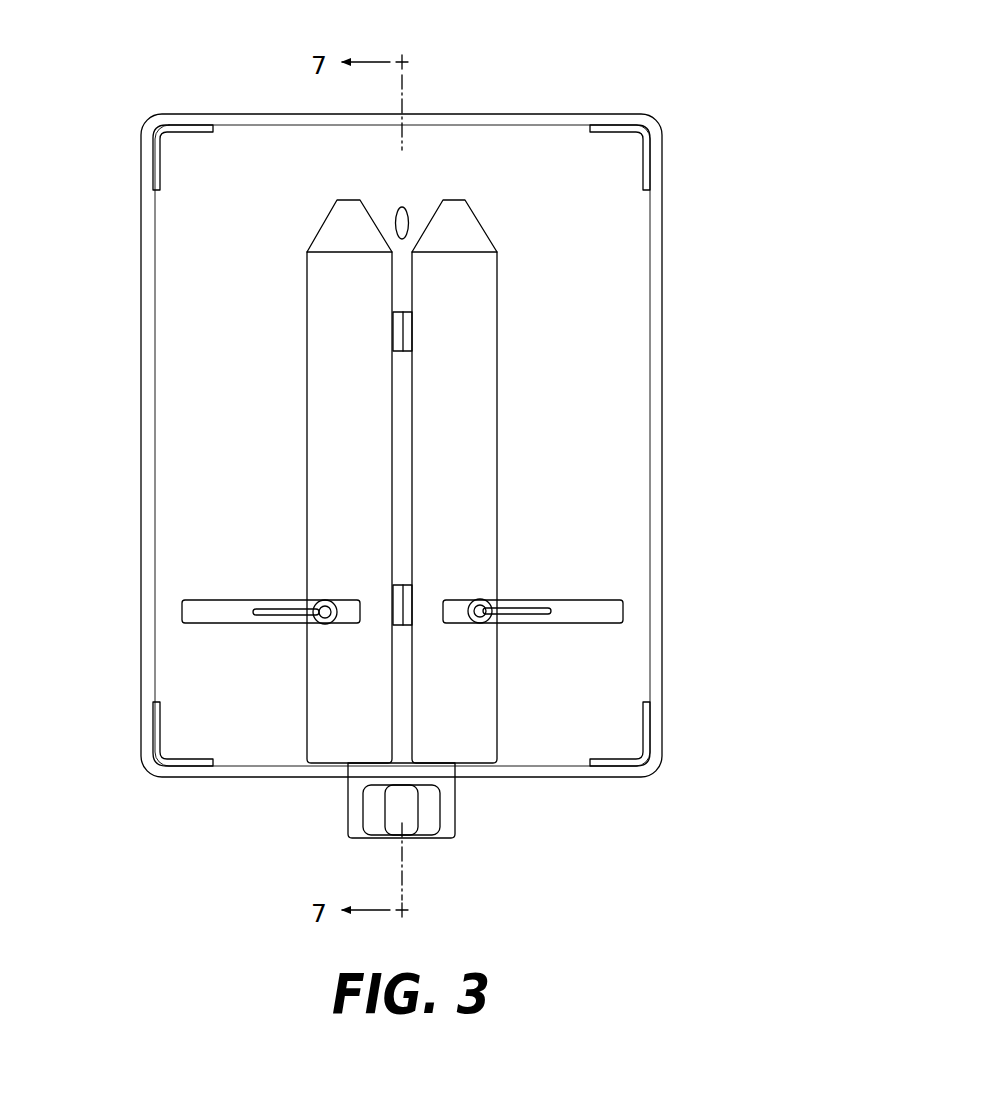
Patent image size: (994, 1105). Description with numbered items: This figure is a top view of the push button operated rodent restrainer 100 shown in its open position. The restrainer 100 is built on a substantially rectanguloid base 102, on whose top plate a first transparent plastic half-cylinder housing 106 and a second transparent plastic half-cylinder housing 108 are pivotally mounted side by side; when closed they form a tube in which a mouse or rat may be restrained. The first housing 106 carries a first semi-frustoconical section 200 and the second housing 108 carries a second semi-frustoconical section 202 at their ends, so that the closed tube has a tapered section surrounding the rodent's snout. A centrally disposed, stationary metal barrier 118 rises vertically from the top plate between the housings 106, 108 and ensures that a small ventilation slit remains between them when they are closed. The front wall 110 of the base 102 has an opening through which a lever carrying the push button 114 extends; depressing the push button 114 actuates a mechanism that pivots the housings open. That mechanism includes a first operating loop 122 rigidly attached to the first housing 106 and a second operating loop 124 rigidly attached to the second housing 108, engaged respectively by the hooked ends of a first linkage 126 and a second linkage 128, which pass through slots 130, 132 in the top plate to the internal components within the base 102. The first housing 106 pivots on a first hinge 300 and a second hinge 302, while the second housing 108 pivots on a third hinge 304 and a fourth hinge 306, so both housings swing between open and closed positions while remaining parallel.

The push button operated rodent restrainer 100 is at (678, 93).
The base 102 is at (662, 453).
The first transparent plastic half-cylinder housing 106 is at (497, 408).
The second transparent plastic half-cylinder housing 108 is at (307, 420).
The front wall 110 is at (227, 777).
The push button 114 is at (440, 813).
The centrally disposed stationary metal barrier 118 is at (407, 203).
The first operating loop 122 is at (477, 598).
The second operating loop 124 is at (317, 605).
The first linkage 126 is at (510, 613).
The second linkage 128 is at (293, 613).
The slot 130 is at (617, 612).
The slot 132 is at (188, 608).
The first semi-frustoconical section 200 is at (462, 208).
The second semi-frustoconical section 202 is at (340, 210).
The first hinge 300 is at (408, 330).
The second hinge 302 is at (408, 590).
The third hinge 304 is at (397, 330).
The fourth hinge 306 is at (397, 590).